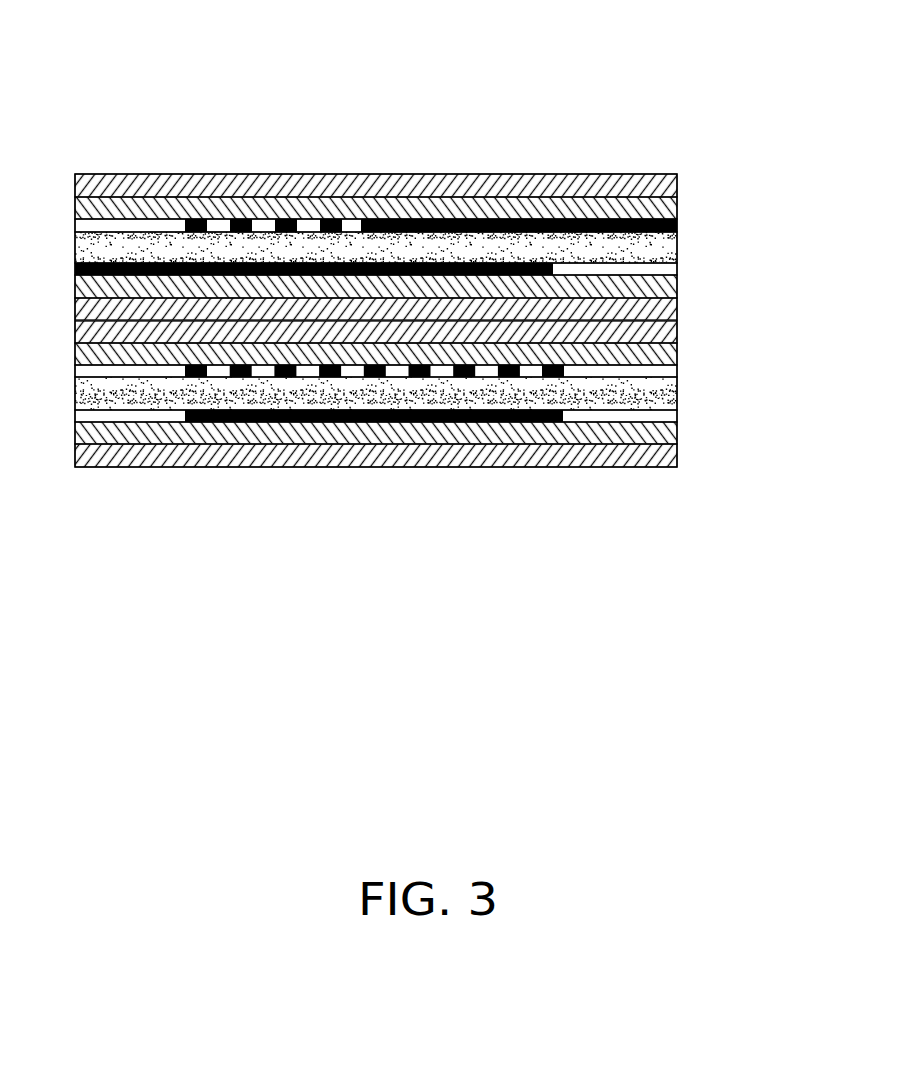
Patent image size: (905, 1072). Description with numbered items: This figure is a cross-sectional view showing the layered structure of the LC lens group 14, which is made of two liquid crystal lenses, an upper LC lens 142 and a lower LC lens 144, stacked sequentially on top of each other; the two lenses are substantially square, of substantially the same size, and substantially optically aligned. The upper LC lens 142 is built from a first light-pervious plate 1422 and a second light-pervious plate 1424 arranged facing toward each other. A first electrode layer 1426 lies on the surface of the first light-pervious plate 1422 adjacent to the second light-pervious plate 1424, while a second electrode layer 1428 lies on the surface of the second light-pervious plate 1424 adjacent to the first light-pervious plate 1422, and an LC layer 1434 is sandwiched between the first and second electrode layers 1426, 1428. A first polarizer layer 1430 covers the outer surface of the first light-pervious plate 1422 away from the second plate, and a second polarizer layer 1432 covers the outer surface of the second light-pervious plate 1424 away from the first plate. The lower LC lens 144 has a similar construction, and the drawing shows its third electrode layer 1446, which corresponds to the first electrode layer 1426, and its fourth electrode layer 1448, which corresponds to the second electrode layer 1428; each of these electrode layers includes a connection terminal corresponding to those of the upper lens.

The LC lens group 14 is at (419, 241).
The LC lens 142 is at (450, 248).
The LC lens 144 is at (402, 394).
The first polarizer layer 1430 is at (672, 176).
The first light-pervious plate 1422 is at (660, 213).
The first electrode layer 1426 is at (674, 223).
The LC layer 1434 is at (658, 247).
The second electrode layer 1428 is at (553, 270).
The second light-pervious plate 1424 is at (662, 288).
The second polarizer layer 1432 is at (419, 319).
The third electrode layer 1446 is at (564, 372).
The fourth electrode layer 1448 is at (563, 416).